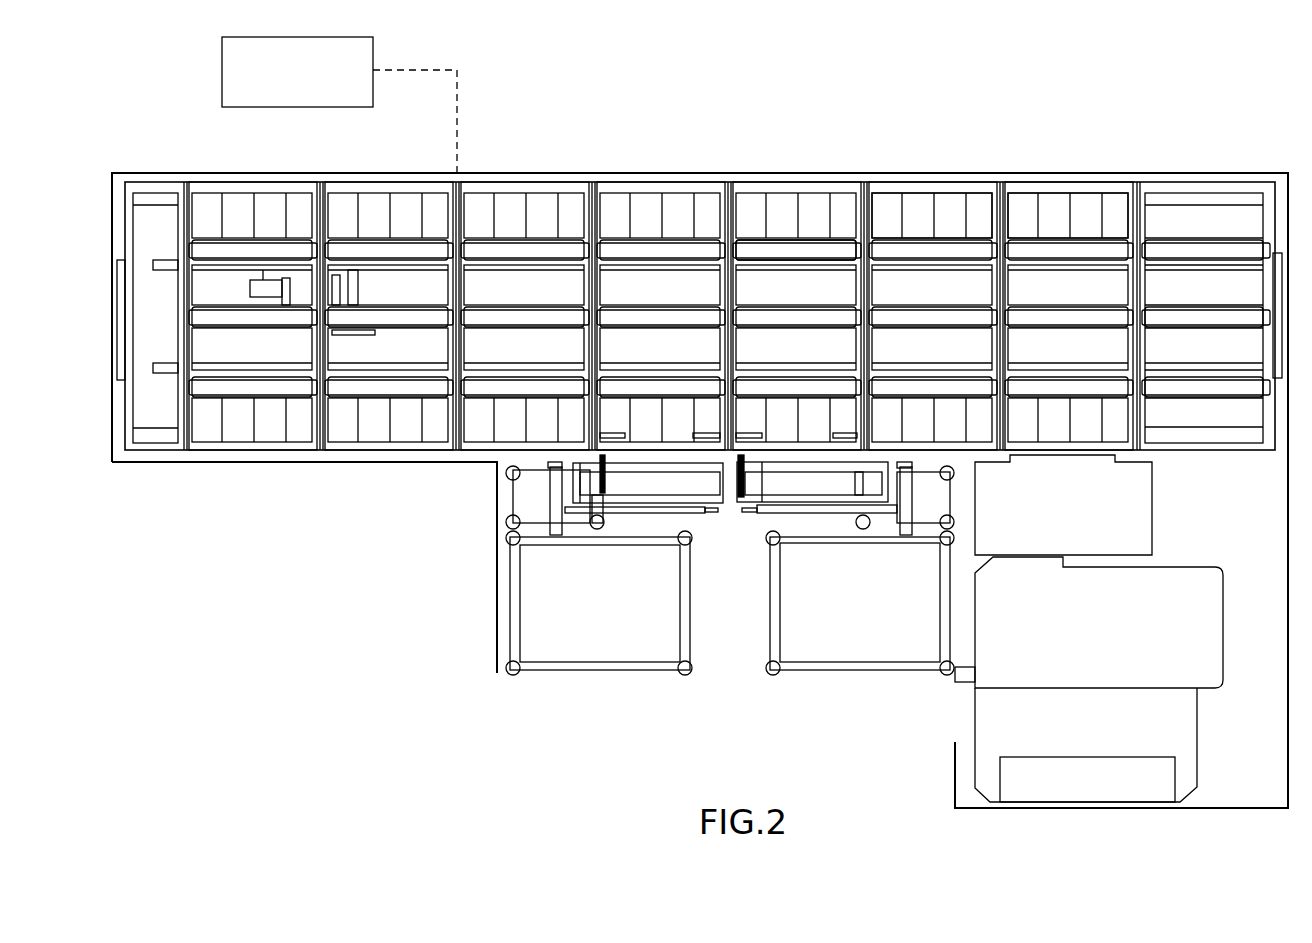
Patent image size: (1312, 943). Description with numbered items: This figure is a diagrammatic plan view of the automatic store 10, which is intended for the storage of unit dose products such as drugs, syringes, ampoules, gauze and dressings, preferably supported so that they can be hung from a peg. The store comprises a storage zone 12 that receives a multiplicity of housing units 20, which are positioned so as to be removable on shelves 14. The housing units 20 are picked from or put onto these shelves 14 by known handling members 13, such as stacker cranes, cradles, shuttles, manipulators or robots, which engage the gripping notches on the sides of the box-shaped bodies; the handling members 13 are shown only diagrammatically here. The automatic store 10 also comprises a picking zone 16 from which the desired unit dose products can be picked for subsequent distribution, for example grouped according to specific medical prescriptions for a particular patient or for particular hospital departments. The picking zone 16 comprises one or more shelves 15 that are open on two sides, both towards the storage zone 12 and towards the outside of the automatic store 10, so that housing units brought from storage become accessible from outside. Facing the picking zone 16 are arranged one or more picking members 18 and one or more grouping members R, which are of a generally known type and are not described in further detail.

The automatic store 10 is at (1163, 137).
The storage zone 12 is at (633, 285).
The handling members 13 is at (257, 108).
The shelves 14 is at (772, 248).
The shelves 15 is at (727, 447).
The picking zone 16 is at (621, 461).
The picking members 18 is at (770, 500).
The housing units 20 is at (952, 205).
The grouping members R is at (593, 652).